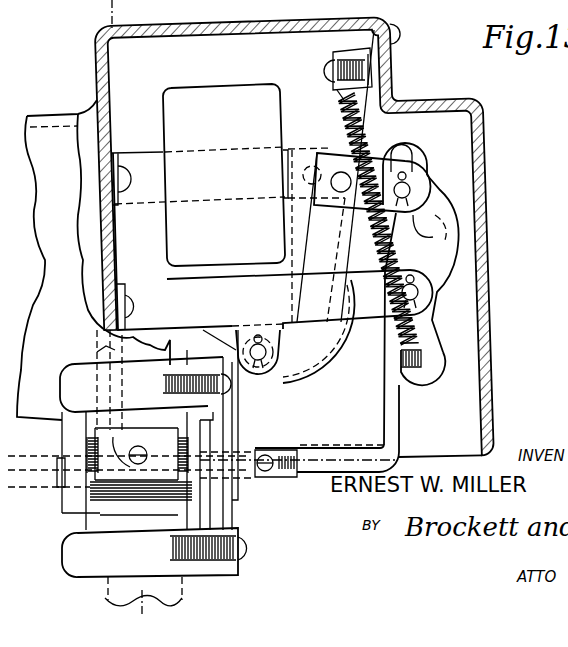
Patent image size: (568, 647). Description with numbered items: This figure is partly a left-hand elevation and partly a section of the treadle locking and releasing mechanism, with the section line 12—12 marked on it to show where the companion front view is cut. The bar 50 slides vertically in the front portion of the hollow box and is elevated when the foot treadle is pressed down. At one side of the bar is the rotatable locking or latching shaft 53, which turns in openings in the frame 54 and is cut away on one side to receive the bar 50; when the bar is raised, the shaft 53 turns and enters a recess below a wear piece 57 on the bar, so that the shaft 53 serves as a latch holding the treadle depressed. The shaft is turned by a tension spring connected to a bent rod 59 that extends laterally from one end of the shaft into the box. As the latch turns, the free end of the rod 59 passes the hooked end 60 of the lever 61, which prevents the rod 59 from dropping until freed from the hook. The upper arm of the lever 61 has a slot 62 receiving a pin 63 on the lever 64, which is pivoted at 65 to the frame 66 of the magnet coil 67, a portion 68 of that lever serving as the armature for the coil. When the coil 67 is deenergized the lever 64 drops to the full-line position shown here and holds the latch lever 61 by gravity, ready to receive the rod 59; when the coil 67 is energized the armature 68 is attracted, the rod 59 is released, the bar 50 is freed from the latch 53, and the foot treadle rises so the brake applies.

The section line 12— 12 is at (112, 9).
The bar 50 is at (182, 586).
The locking or latching shaft 53 is at (60, 476).
The frame 54 is at (75, 432).
The wear piece 57 is at (107, 498).
The bent rod 59 is at (414, 440).
The hooked end 60 is at (422, 376).
The lever 61 is at (428, 325).
The slot 62 is at (441, 217).
The pin 63 is at (404, 190).
The lever 64 is at (310, 345).
The pivot 65 is at (268, 373).
The frame 66 is at (261, 241).
The magnet coil 67 is at (258, 95).
The armature 68 is at (320, 158).